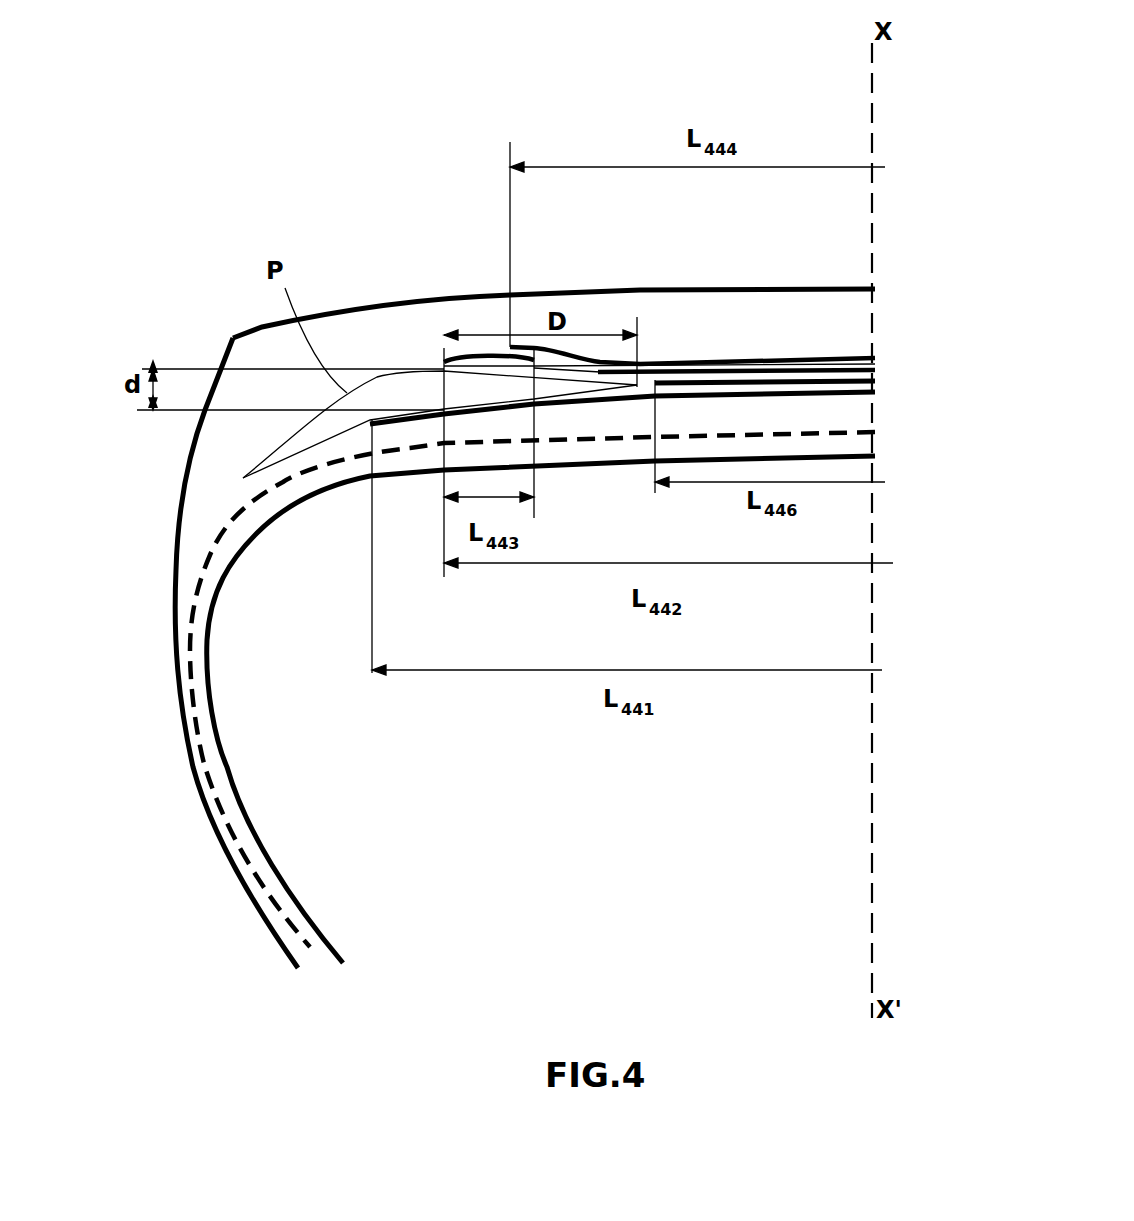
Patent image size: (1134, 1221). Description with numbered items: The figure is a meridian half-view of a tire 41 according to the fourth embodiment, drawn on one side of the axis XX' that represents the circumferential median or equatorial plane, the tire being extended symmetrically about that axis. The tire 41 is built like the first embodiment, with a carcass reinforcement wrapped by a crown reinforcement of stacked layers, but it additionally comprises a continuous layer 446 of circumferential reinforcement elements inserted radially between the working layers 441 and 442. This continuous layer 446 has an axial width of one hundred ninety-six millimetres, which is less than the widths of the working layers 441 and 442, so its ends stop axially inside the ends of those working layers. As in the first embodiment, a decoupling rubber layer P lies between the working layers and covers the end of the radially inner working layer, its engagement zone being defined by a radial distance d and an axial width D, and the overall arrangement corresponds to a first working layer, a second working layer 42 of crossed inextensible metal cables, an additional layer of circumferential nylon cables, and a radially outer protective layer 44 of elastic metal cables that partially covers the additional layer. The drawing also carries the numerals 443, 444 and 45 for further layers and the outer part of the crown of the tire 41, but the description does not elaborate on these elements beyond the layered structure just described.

The tire 41 is at (138, 304).
The second working layer 42 is at (218, 570).
The protective layer 44 is at (888, 384).
The working layer 441 is at (817, 397).
The working layer 442 is at (765, 368).
The third layer 443 is at (453, 348).
The fourth layer 444 is at (702, 357).
The continuous layer 446 is at (845, 380).
The outer cover 45 is at (768, 303).